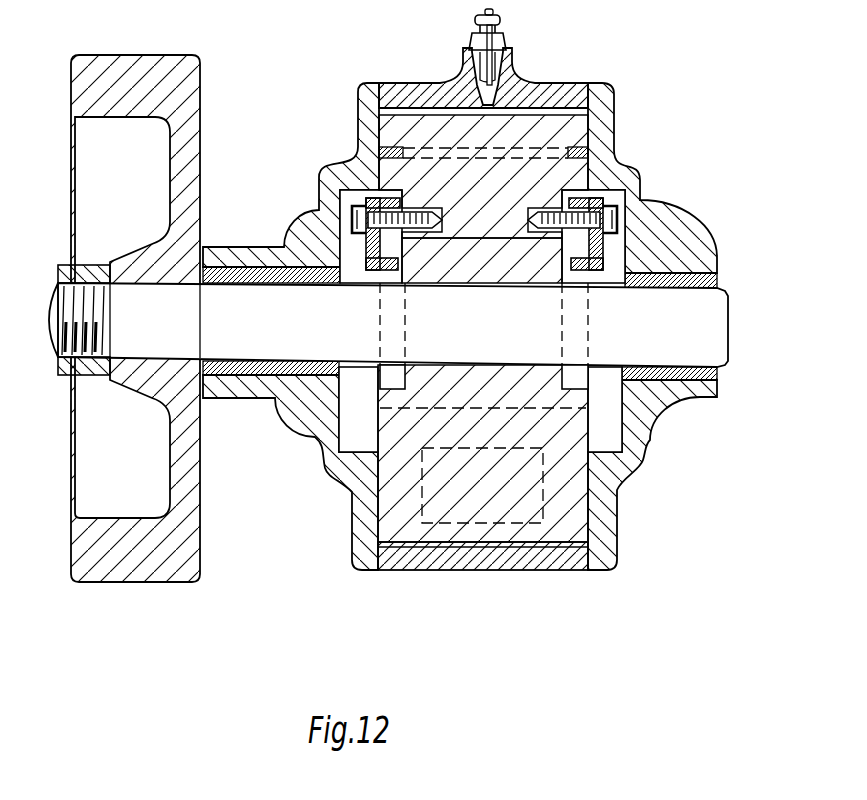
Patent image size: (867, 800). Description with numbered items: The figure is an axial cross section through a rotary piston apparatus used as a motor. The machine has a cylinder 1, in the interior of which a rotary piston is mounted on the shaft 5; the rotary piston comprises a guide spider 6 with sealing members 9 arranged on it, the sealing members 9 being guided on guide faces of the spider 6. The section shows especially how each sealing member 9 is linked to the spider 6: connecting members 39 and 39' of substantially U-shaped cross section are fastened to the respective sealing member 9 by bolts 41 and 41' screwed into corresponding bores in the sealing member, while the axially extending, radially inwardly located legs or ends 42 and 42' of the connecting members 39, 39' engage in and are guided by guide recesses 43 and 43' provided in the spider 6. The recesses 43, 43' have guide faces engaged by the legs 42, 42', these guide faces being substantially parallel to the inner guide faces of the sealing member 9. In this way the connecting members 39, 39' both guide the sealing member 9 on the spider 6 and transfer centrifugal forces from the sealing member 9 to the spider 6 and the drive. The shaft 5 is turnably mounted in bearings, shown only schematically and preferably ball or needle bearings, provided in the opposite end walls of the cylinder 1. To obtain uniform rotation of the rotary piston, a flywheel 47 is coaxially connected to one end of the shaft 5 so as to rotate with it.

The cylinder 1 is at (603, 133).
The shaft 5 is at (697, 303).
The guide spider 6 is at (557, 447).
The sealing member 9 is at (547, 127).
The connecting member 39 is at (615, 234).
The connecting member 39' is at (353, 212).
The bolt 41 is at (645, 179).
The bolt 41' is at (330, 173).
The leg of connecting member 42 is at (568, 296).
The leg of connecting member 42' is at (368, 298).
The recess 43 is at (589, 398).
The recess 43' is at (374, 401).
The flywheel 47 is at (102, 555).